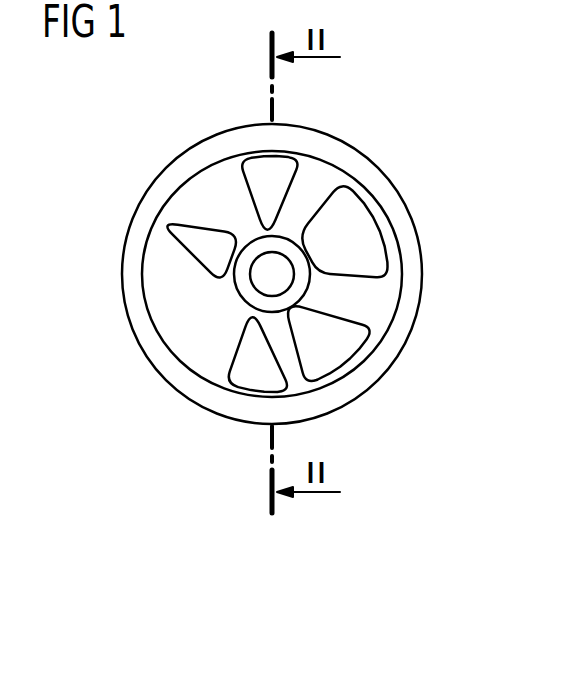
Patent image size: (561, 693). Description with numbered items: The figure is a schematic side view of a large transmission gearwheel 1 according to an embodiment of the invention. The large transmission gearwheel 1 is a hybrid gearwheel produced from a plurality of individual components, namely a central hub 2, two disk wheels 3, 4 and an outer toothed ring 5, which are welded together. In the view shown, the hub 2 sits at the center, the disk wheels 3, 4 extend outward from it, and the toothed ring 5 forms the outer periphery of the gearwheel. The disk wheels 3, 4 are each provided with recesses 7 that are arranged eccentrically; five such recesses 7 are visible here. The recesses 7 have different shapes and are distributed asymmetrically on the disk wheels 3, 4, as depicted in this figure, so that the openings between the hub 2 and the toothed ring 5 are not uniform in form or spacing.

The large transmission gearwheel 1 is at (428, 122).
The hub 2 is at (293, 285).
The disk wheel 3 is at (244, 270).
The disk wheel 4 is at (244, 270).
The toothed ring 5 is at (172, 182).
The recess 7 is at (252, 170).